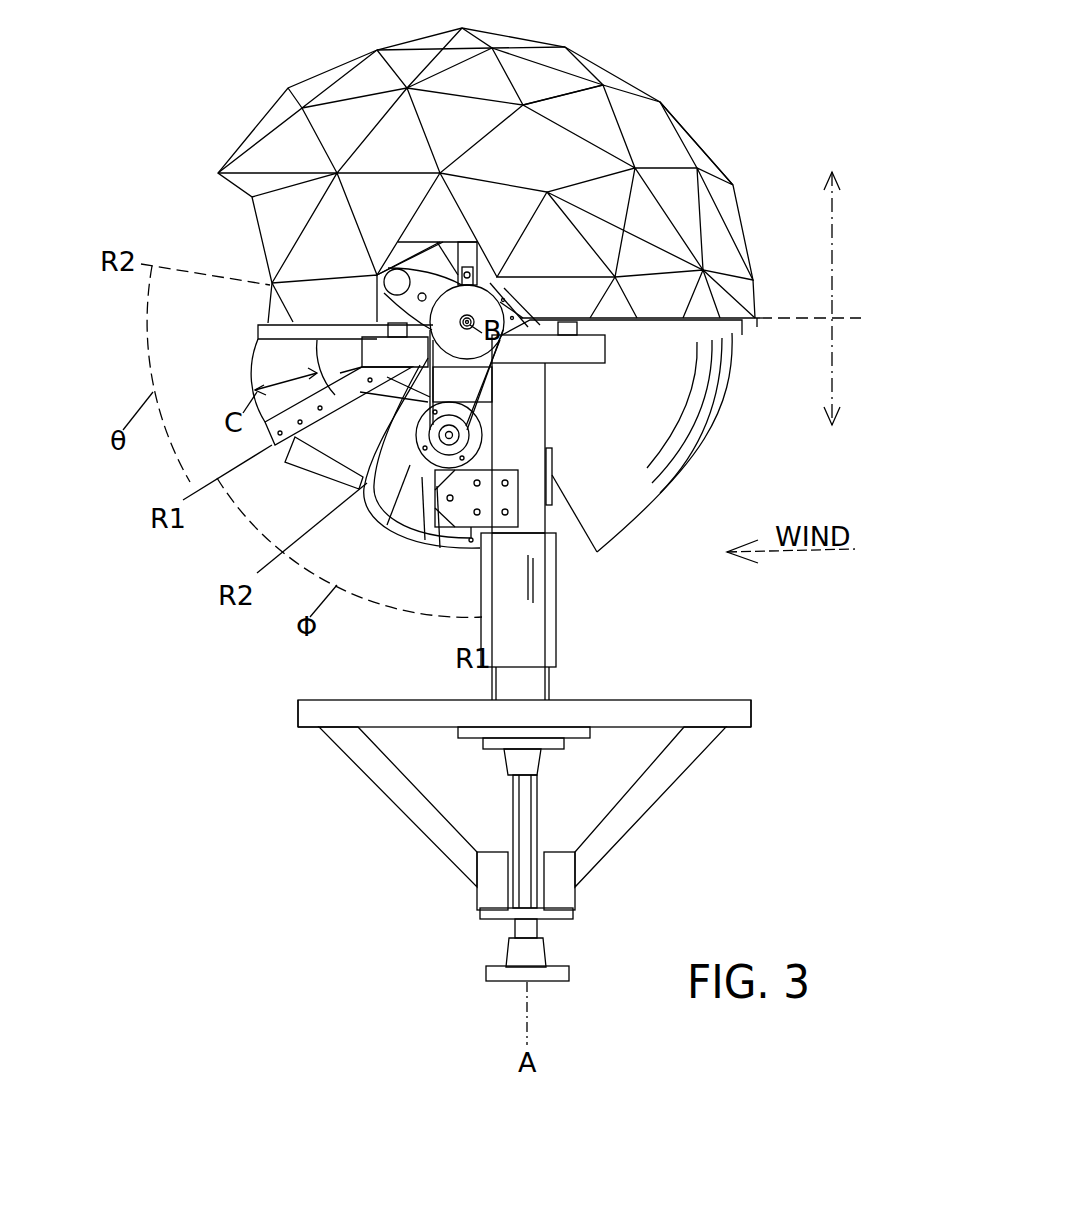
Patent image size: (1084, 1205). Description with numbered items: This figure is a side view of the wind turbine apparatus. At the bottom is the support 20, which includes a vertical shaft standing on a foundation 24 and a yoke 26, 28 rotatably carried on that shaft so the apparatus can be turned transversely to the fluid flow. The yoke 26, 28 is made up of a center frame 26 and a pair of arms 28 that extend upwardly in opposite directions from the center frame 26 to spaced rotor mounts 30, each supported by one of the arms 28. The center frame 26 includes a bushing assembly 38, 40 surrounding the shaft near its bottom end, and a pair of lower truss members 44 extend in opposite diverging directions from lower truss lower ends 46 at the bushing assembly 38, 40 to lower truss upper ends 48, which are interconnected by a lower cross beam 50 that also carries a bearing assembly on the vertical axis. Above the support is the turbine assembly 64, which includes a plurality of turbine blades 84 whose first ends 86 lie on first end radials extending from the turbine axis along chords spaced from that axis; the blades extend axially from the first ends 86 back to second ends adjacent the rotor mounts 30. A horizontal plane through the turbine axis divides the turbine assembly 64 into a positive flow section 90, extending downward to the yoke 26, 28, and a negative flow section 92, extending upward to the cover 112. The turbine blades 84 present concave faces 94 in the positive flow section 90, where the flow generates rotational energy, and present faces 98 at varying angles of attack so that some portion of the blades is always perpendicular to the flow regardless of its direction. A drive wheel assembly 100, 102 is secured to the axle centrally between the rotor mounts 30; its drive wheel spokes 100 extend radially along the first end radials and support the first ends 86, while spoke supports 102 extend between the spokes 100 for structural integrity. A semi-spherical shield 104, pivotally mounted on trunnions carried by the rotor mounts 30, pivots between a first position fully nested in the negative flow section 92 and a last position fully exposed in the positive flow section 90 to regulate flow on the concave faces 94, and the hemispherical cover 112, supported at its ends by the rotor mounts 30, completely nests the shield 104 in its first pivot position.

The support 20 is at (355, 824).
The foundation 24 is at (543, 947).
The center frame 26 is at (657, 816).
The arms 28 is at (553, 590).
The rotor mounts 30 is at (548, 397).
The bushing assembly 38 is at (478, 904).
The bushing assembly 40 is at (502, 919).
The lower truss members 44 is at (330, 747).
The lower truss lower ends 46 is at (478, 854).
The lower truss upper ends 48 is at (336, 727).
The lower cross beam 50 is at (634, 697).
The turbine assembly 64 is at (205, 555).
The turbine blades 84 is at (257, 344).
The first ends 86 is at (302, 448).
The positive flow section 90 is at (839, 385).
The negative flow section 92 is at (837, 219).
The concave faces 94 is at (293, 373).
The faces 98 is at (422, 527).
The drive wheel spokes 100 is at (363, 398).
The spoke supports 102 is at (383, 430).
The shield 104 is at (712, 430).
The cover 112 is at (618, 58).